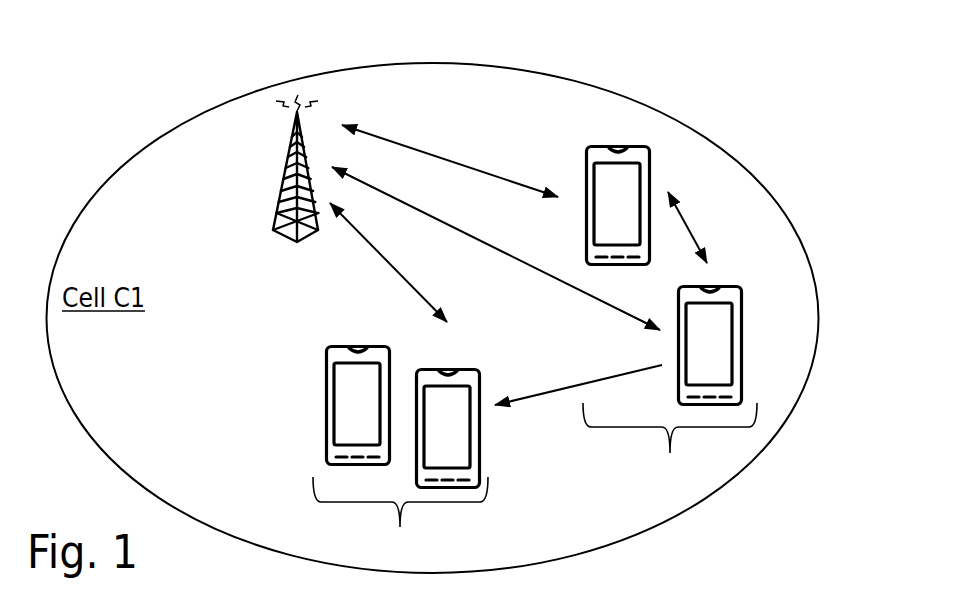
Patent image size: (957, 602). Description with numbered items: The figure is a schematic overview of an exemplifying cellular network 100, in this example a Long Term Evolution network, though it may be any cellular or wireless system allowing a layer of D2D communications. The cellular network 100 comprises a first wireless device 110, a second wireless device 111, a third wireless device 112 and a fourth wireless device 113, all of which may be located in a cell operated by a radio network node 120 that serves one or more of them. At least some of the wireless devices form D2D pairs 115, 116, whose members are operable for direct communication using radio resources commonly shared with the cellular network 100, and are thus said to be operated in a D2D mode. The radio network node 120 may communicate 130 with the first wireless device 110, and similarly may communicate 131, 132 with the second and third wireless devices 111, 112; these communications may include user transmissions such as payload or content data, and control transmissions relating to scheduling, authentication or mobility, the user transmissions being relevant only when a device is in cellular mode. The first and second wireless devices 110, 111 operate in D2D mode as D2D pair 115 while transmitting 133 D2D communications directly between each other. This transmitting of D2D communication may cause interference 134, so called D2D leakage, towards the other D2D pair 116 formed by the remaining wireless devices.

The cellular network 100 is at (478, 102).
The first wireless device 110 is at (618, 206).
The second wireless device 111 is at (710, 346).
The third wireless device 112 is at (358, 406).
The fourth wireless device 113 is at (448, 429).
The D2D pair 115 is at (670, 442).
The D2D pair 116 is at (400, 515).
The radio network node 120 is at (233, 184).
The communication 130 is at (450, 161).
The communication 131 is at (496, 248).
The communication 132 is at (388, 262).
The transmitting of D2D communications 133 is at (704, 227).
The interference 134 is at (578, 375).